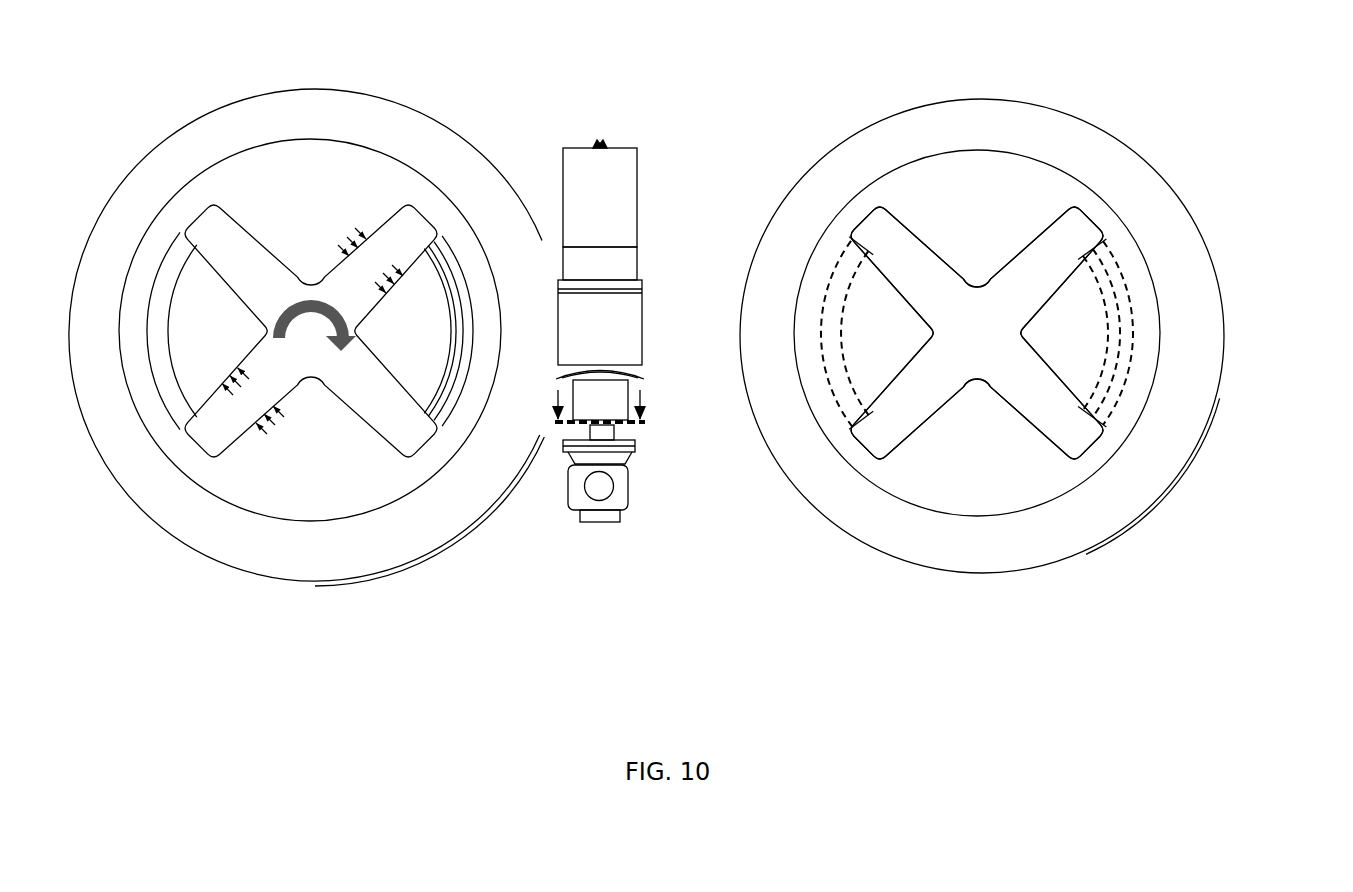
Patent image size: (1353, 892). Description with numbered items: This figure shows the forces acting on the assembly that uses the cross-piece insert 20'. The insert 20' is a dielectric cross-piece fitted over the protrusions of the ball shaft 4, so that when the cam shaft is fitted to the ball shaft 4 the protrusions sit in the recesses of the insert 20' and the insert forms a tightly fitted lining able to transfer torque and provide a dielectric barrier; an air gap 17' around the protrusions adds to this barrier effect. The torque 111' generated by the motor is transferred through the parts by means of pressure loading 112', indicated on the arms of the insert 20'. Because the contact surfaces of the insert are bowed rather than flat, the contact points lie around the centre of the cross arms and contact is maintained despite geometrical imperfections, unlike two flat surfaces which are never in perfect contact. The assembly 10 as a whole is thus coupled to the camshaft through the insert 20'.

The rotor 10 is at (1048, 342).
The air gap 17' is at (937, 273).
The insert 20' is at (990, 349).
The torque 111' is at (459, 322).
The pressure loading 112' is at (229, 383).
The ball shaft 4 is at (1073, 465).